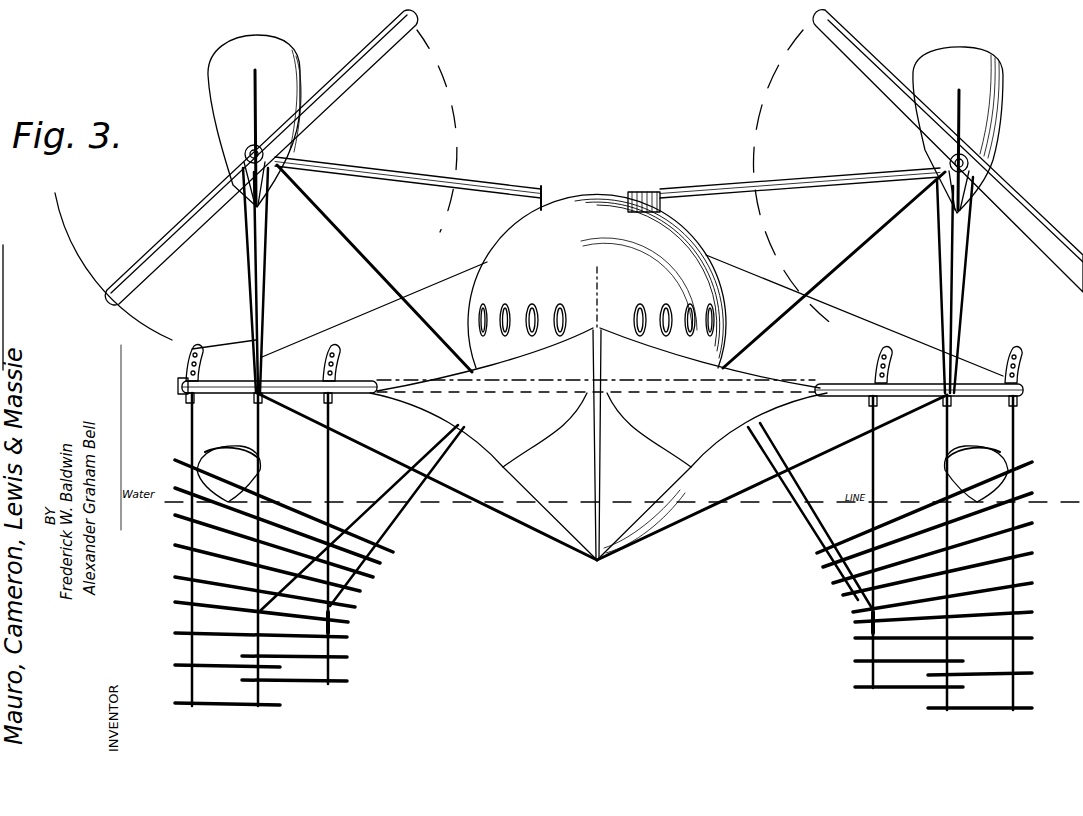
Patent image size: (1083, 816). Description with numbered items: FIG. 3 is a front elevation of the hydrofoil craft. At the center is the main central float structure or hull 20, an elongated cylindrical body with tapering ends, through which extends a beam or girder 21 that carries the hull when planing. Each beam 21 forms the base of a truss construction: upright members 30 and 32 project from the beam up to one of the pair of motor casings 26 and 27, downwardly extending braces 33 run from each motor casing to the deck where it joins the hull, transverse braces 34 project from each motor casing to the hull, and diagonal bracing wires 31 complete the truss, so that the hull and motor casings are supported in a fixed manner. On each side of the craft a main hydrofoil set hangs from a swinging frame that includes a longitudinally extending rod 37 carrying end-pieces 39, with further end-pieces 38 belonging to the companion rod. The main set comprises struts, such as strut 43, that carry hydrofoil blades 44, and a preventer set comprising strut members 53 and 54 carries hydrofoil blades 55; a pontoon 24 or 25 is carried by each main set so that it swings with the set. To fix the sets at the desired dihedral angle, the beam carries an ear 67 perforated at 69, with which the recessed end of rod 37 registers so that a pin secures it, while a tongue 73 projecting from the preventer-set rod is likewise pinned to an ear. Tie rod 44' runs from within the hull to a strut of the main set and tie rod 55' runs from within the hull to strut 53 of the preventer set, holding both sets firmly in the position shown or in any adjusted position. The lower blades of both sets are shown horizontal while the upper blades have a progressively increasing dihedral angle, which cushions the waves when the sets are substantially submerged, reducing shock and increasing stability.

The main central float structure or hull 20 is at (692, 268).
The beam or girder 21 is at (517, 395).
The pontoon 24 is at (252, 462).
The pontoon 25 is at (992, 462).
The motor casing 26 is at (217, 72).
The motor casing 27 is at (995, 100).
The upright member 30 is at (266, 258).
The diagonal bracing wire 31 is at (254, 256).
The upright member 32 is at (240, 236).
The downwardly extending brace 33 is at (362, 252).
The transverse brace 34 is at (458, 178).
The longitudinally extending rod 37 is at (180, 393).
The end-piece 38 is at (286, 384).
The end-piece 39 is at (231, 391).
The strut 43 is at (190, 447).
The hydrofoil blade 44 is at (606, 541).
The tie rod 44' is at (559, 518).
The strut member 53 is at (331, 474).
The strut member 54 is at (262, 512).
The hydrofoil blade 55 is at (600, 590).
The tie rod 55' is at (601, 516).
The ear 67 is at (187, 361).
The perforation 69 is at (334, 349).
The tongue 73 is at (338, 372).